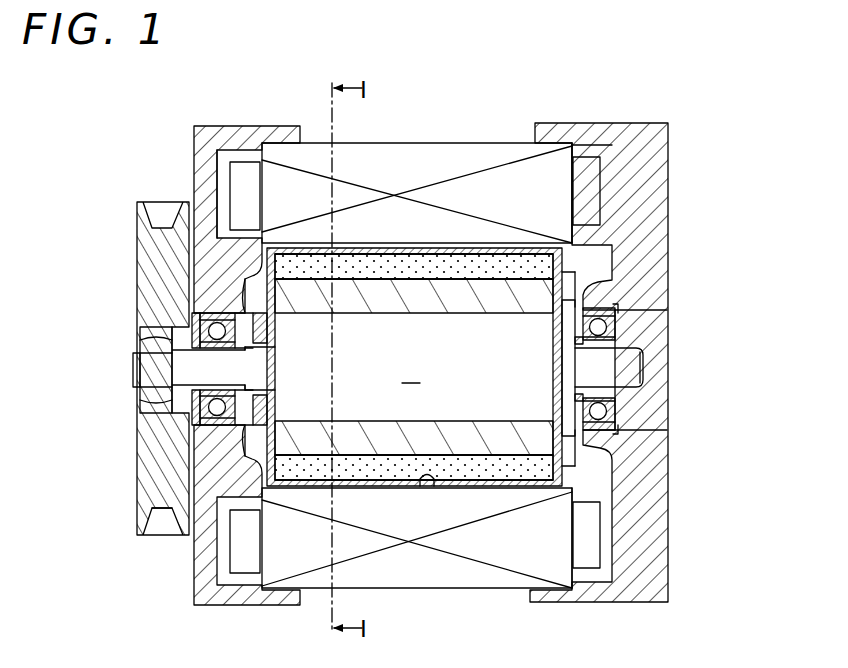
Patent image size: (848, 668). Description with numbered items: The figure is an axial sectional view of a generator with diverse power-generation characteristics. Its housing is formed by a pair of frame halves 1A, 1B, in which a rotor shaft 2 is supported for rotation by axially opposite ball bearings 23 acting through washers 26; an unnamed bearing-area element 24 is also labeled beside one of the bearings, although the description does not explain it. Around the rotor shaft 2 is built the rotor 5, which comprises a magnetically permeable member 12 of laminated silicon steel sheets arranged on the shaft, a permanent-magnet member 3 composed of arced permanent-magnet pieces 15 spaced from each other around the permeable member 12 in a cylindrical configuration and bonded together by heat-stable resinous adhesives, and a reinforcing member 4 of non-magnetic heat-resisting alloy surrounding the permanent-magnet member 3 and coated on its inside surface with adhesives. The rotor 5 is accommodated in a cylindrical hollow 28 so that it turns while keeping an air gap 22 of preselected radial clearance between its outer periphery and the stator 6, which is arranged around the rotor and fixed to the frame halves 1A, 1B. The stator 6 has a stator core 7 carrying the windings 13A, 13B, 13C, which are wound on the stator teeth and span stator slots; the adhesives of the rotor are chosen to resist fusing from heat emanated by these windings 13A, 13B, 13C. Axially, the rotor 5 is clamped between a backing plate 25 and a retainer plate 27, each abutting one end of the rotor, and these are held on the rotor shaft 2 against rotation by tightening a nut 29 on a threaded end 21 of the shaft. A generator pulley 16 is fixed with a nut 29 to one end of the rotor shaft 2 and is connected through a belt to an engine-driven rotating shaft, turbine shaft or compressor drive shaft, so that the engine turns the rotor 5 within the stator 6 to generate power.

The frame half 1A is at (206, 163).
The frame half 1B is at (648, 161).
The rotor shaft 2 is at (620, 369).
The permanent-magnet member 3 is at (432, 266).
The reinforcing member 4 is at (497, 254).
The rotor 5 is at (562, 271).
The stator 6 is at (401, 142).
The stator core 7 is at (540, 196).
The magnetically permeable member 12 is at (298, 437).
The winding 13A is at (245, 180).
The winding 13B is at (586, 362).
The winding 13C is at (414, 191).
The permanent-magnet piece 15 is at (367, 268).
The generator pulley 16 is at (152, 262).
The threaded end 21 is at (175, 362).
The air gap 22 is at (463, 249).
The ball bearing 23 is at (210, 412).
The bearing holder 24 is at (244, 316).
The backing plate 25 is at (565, 360).
The washer 26 is at (250, 393).
The retainer plate 27 is at (185, 537).
The cylindrical hollow 28 is at (434, 481).
The nut 29 is at (150, 345).